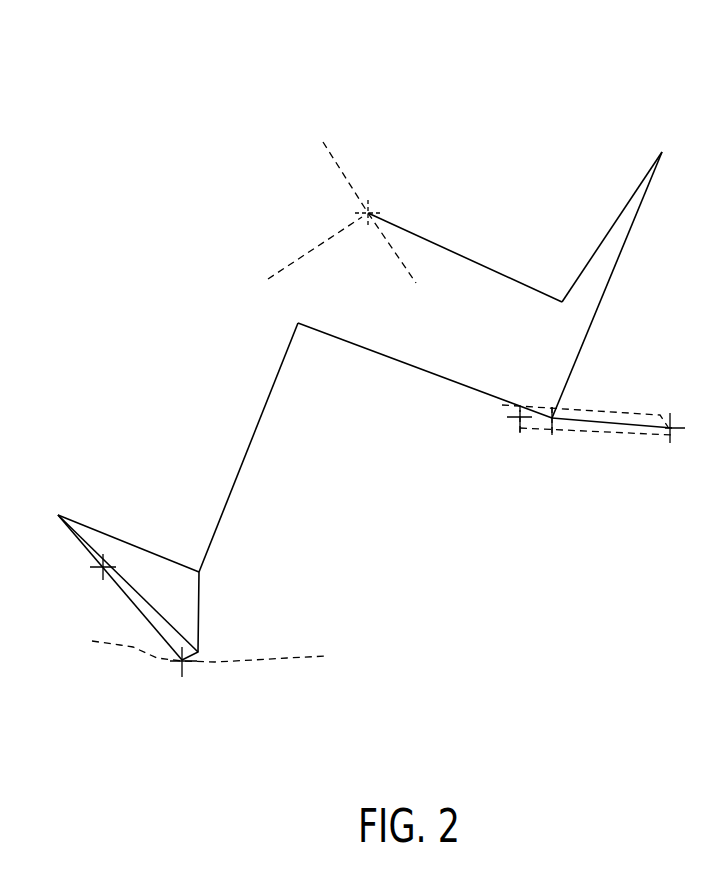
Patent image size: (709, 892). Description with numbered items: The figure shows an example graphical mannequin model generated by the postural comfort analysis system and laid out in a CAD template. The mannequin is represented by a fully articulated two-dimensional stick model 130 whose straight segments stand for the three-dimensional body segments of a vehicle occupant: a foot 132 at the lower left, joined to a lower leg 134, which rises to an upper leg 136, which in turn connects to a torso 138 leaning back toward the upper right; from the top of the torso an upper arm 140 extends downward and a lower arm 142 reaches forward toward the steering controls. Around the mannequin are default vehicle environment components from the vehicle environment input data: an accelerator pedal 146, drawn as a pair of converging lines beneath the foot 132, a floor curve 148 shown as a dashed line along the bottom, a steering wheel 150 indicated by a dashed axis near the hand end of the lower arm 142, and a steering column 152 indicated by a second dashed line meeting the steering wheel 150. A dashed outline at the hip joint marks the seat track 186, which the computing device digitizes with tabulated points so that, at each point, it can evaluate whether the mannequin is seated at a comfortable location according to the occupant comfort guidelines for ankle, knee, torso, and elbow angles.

The 2D stick model 130 is at (138, 108).
The foot 132 is at (142, 548).
The lower leg 134 is at (245, 459).
The upper leg 136 is at (413, 370).
The torso 138 is at (598, 313).
The upper arm 140 is at (602, 238).
The lower arm 142 is at (457, 248).
The accelerator pedal 146 is at (125, 595).
The floor curve 148 is at (278, 660).
The steering wheel 150 is at (331, 146).
The steering column 152 is at (308, 248).
The seat track 186 is at (540, 440).